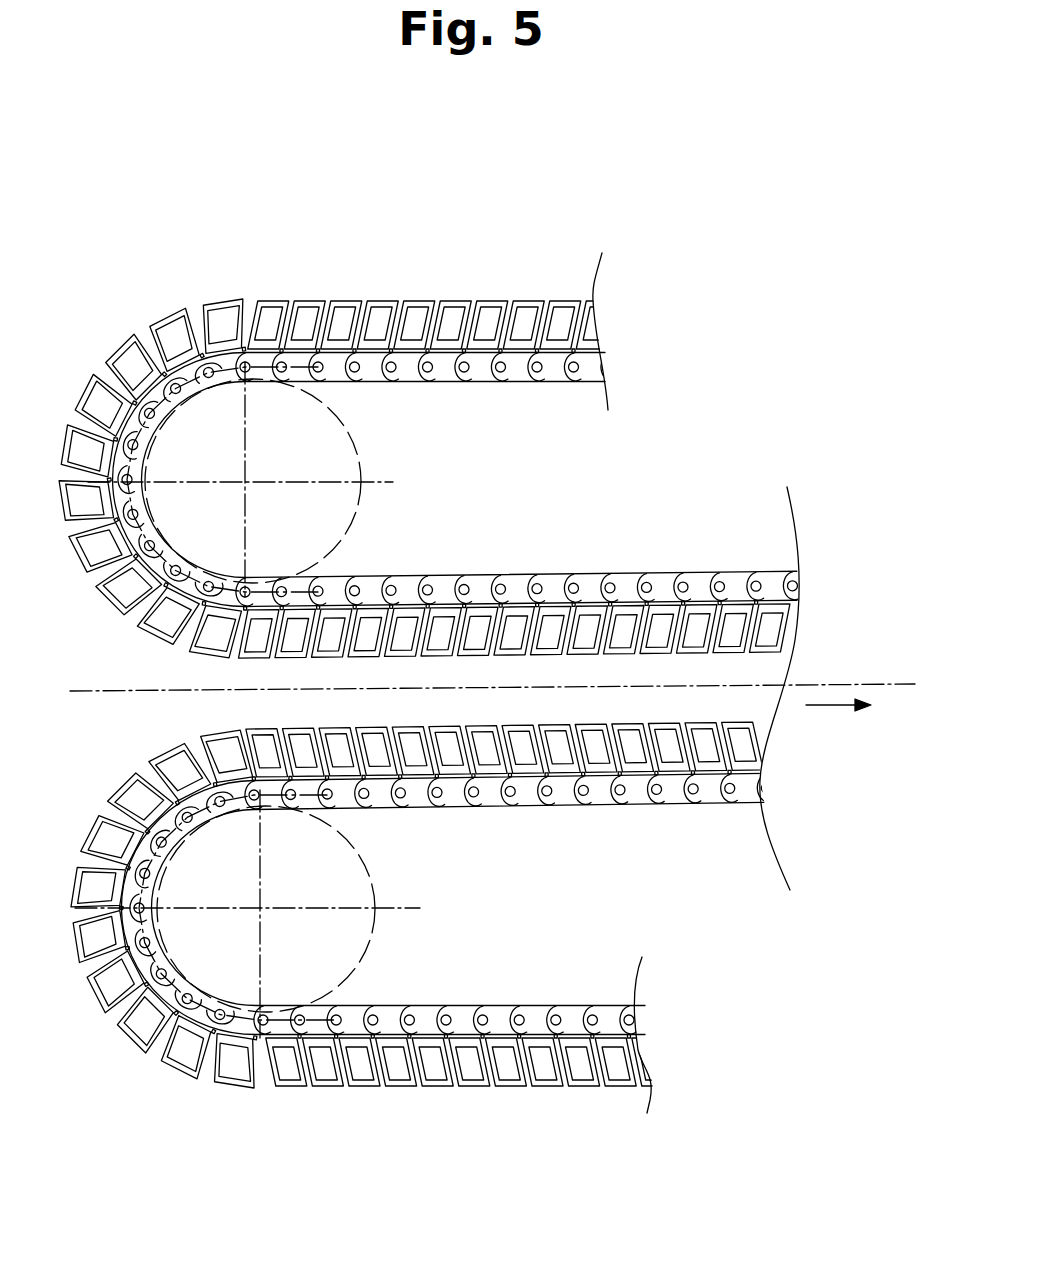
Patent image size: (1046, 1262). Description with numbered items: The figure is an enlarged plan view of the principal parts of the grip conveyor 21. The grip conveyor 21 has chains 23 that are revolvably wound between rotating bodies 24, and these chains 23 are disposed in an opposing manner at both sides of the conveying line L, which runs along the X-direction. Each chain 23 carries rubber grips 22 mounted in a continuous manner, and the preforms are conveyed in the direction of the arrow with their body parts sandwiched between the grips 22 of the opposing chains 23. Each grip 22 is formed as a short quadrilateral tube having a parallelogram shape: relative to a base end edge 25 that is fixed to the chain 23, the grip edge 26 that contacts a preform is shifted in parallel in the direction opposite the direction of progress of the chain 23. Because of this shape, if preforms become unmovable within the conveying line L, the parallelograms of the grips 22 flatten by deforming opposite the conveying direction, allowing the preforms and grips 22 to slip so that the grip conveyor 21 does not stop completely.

The grip conveyor 21 is at (110, 328).
The grip 22 is at (173, 318).
The chain 23 is at (203, 362).
The rotating body 24 is at (293, 423).
The base end edge 25 is at (705, 618).
The grip edge 26 is at (690, 650).
The conveying line L is at (140, 697).